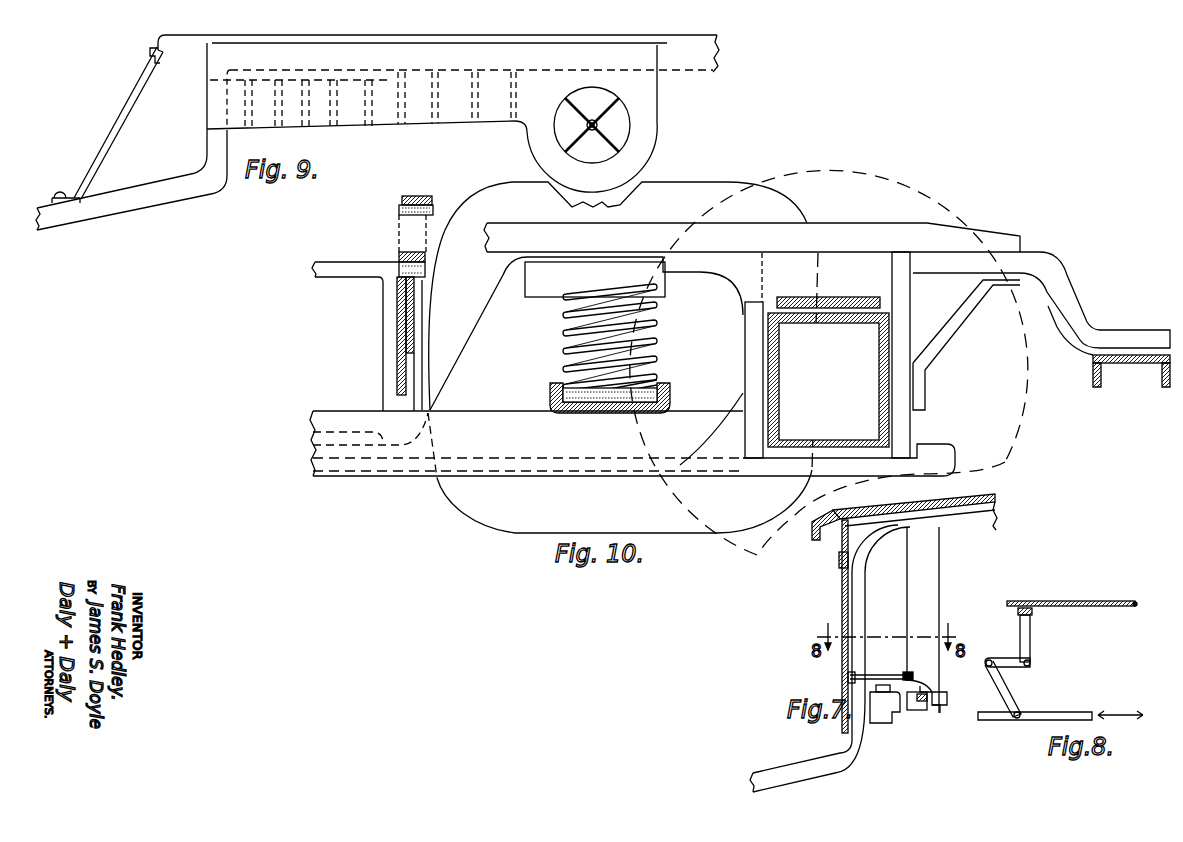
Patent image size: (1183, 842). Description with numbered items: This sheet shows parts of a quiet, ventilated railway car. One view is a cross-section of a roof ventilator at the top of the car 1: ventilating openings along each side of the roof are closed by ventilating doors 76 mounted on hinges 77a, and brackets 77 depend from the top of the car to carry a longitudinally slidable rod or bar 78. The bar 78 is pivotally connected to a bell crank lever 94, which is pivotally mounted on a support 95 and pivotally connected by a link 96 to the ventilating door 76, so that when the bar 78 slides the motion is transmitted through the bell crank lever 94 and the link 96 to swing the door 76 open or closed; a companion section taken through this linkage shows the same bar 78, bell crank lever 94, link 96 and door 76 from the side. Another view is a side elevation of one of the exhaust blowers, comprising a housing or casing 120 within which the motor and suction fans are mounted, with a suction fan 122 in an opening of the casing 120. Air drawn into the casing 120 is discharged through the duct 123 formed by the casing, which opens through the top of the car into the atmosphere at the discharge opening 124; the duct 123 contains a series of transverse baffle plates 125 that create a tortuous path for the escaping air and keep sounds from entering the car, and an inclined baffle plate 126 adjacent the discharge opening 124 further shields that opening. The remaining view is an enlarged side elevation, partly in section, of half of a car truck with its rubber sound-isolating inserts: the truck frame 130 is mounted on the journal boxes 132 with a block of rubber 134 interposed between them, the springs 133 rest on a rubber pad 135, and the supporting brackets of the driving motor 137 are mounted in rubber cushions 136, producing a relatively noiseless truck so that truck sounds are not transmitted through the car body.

In FIG. 9, the car roof 1 is at (713, 72).
In FIG. 7, the car roof 1 is at (983, 523).
In FIG. 9, the housing or casing 120 is at (657, 118).
In FIG. 9, the suction fan 122 is at (612, 108).
In FIG. 9, the duct 123 is at (392, 126).
In FIG. 9, the discharge opening 124 is at (204, 125).
In FIG. 9, the transverse baffle plates 125 is at (342, 128).
In FIG. 9, the inclined baffle plate 126 is at (115, 128).
In FIG. 10, the truck frame 130 is at (358, 478).
In FIG. 10, the journal boxes 132 is at (855, 318).
In FIG. 10, the springs 133 is at (566, 352).
In FIG. 10, the block of rubber 134 is at (880, 303).
In FIG. 10, the rubber pad 135 is at (565, 413).
In FIG. 10, the rubber cushions 136 is at (390, 254).
In FIG. 10, the driving motor 137 is at (490, 520).
In FIG. 7, the ventilating doors 76 is at (842, 605).
In FIG. 8, the ventilating doors 76 is at (1075, 607).
In FIG. 7, the brackets 77 is at (940, 590).
In FIG. 7, the hinges 77a is at (850, 572).
In FIG. 7, the longitudinally slidable rod or bar 78 is at (932, 710).
In FIG. 8, the longitudinally slidable rod or bar 78 is at (1065, 712).
In FIG. 7, the bell crank lever 94 is at (918, 712).
In FIG. 8, the bell crank lever 94 is at (1003, 672).
In FIG. 7, the support 95 is at (886, 723).
In FIG. 7, the link 96 is at (883, 675).
In FIG. 8, the link 96 is at (1030, 640).